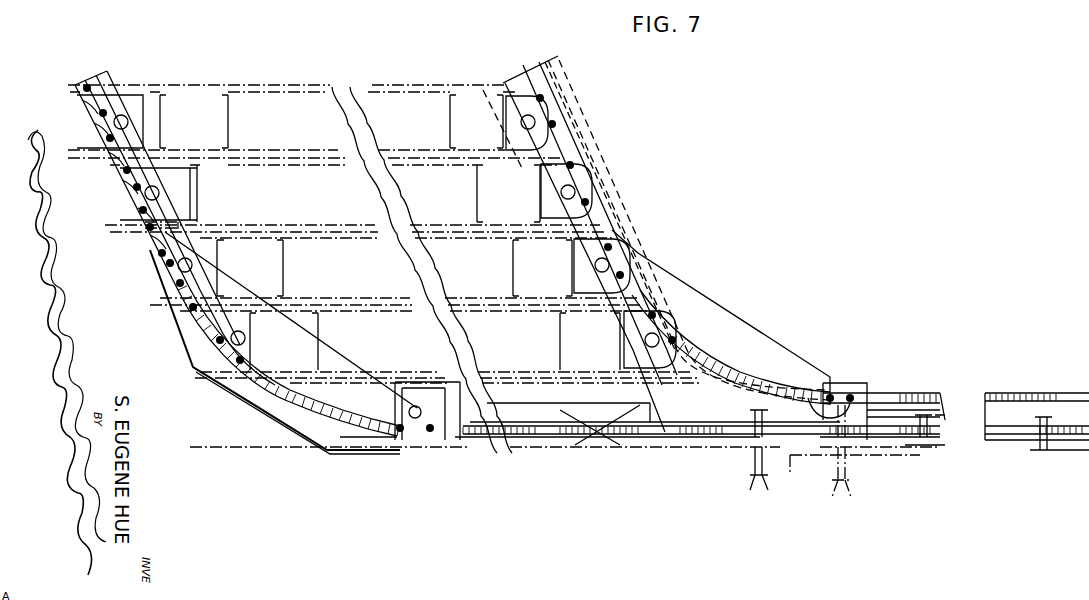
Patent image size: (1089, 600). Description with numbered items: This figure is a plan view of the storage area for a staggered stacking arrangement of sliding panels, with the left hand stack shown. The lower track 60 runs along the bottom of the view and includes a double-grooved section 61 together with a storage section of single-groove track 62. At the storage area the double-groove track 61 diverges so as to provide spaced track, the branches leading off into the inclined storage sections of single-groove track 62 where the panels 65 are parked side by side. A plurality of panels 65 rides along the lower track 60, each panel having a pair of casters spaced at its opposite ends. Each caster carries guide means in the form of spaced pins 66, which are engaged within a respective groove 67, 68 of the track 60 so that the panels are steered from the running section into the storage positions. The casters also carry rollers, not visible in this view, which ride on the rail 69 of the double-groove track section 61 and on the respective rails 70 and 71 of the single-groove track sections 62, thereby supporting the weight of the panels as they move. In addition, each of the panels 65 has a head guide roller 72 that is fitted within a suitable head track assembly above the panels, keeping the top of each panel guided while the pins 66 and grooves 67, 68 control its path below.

The lower track 60 is at (1026, 392).
The double-grooved section 61 is at (882, 393).
The single-groove track 62 is at (172, 243).
The panels 65 is at (385, 95).
The spaced pins 66 is at (167, 262).
The groove 67 is at (143, 229).
The groove 68 is at (607, 222).
The rail 69 is at (914, 410).
The rail 70 is at (332, 385).
The rail 71 is at (695, 365).
The head guide roller 72 is at (647, 278).